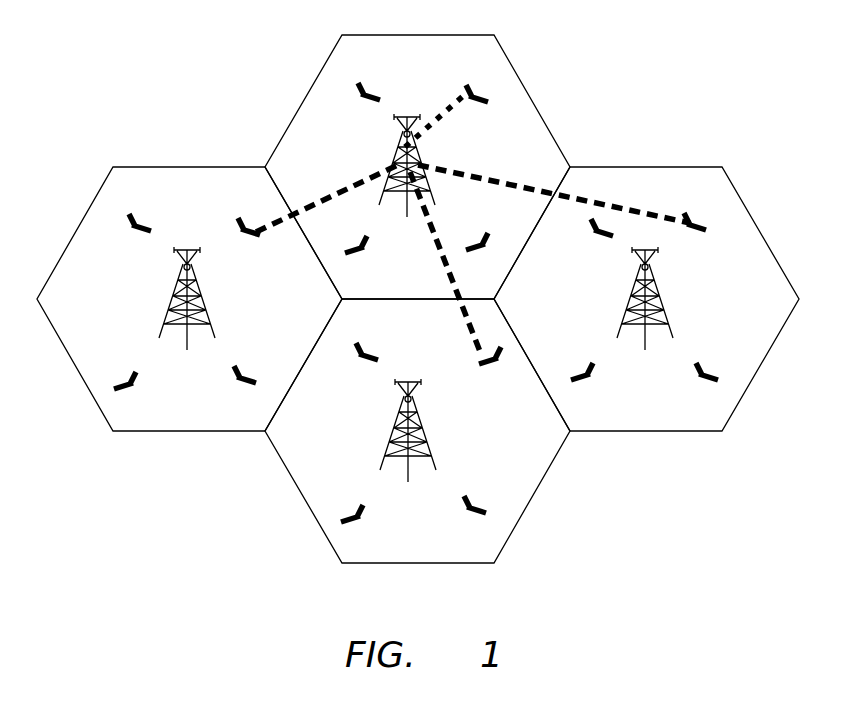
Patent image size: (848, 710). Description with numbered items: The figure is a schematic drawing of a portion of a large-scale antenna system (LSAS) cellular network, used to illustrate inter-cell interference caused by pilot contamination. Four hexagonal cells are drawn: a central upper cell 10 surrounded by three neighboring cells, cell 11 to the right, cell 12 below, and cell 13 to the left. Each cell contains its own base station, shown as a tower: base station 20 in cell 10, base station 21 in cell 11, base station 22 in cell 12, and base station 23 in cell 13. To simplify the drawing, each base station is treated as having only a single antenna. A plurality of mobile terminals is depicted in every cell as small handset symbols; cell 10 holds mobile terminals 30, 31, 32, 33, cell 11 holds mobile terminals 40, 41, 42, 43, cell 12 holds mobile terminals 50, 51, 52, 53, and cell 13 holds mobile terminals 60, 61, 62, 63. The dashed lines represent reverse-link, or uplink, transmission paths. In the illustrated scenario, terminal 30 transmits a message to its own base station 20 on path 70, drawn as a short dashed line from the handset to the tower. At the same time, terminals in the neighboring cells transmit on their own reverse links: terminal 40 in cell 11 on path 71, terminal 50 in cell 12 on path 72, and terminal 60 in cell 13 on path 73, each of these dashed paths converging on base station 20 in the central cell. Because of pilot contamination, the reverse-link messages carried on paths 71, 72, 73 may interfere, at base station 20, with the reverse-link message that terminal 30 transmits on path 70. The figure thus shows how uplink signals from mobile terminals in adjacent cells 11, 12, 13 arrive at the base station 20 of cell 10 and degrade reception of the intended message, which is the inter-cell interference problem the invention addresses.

The cell 10 is at (534, 101).
The cell 11 is at (768, 368).
The cell 12 is at (534, 495).
The cell 13 is at (71, 364).
The base station 20 is at (424, 180).
The base station 21 is at (664, 293).
The base station 22 is at (426, 428).
The base station 23 is at (206, 305).
The mobile terminal 30 is at (483, 75).
The mobile terminal 31 is at (478, 236).
The mobile terminal 32 is at (360, 243).
The mobile terminal 33 is at (358, 88).
The mobile terminal 40 is at (707, 231).
The mobile terminal 41 is at (700, 372).
The mobile terminal 42 is at (586, 371).
The mobile terminal 43 is at (592, 225).
The mobile terminal 50 is at (479, 352).
The mobile terminal 51 is at (467, 502).
The mobile terminal 52 is at (356, 509).
The mobile terminal 53 is at (360, 349).
The mobile terminal 60 is at (240, 222).
The mobile terminal 61 is at (241, 373).
The mobile terminal 62 is at (126, 377).
The mobile terminal 63 is at (132, 225).
The path 70 is at (448, 110).
The path 71 is at (610, 201).
The path 72 is at (447, 270).
The path 73 is at (340, 178).